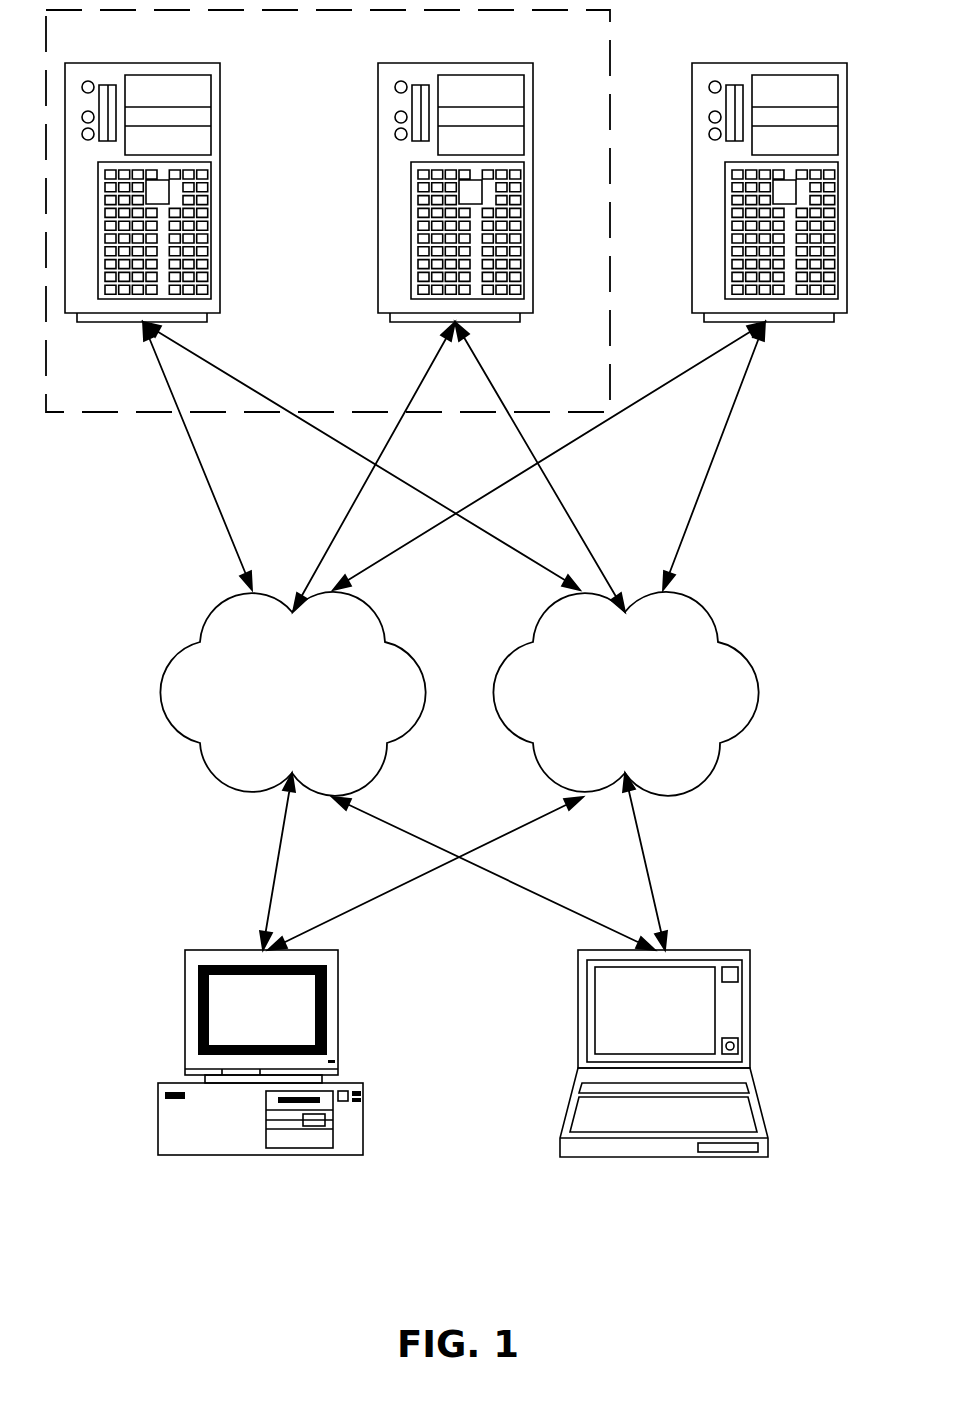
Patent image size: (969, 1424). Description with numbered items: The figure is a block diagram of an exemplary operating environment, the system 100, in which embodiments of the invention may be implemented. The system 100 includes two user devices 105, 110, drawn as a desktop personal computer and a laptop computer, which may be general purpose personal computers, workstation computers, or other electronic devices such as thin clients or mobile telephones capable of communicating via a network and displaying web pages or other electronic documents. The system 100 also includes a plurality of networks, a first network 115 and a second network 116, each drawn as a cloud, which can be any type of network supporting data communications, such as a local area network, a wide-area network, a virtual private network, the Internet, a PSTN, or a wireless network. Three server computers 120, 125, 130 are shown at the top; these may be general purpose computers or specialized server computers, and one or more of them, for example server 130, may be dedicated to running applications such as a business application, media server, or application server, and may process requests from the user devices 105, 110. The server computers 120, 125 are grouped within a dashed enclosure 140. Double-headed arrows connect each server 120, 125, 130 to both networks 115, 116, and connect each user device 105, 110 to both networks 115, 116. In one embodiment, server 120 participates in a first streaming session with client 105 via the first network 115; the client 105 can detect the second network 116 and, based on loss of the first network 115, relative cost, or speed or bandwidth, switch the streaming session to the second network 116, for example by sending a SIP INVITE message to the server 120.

The system 100 is at (786, 610).
The user device 105 is at (348, 1155).
The user device 110 is at (712, 1157).
The first network 115 is at (370, 775).
The second network 116 is at (703, 775).
The server computer 120 is at (197, 322).
The server computer 125 is at (510, 322).
The server computer 130 is at (826, 322).
The server group enclosure 140 is at (72, 412).